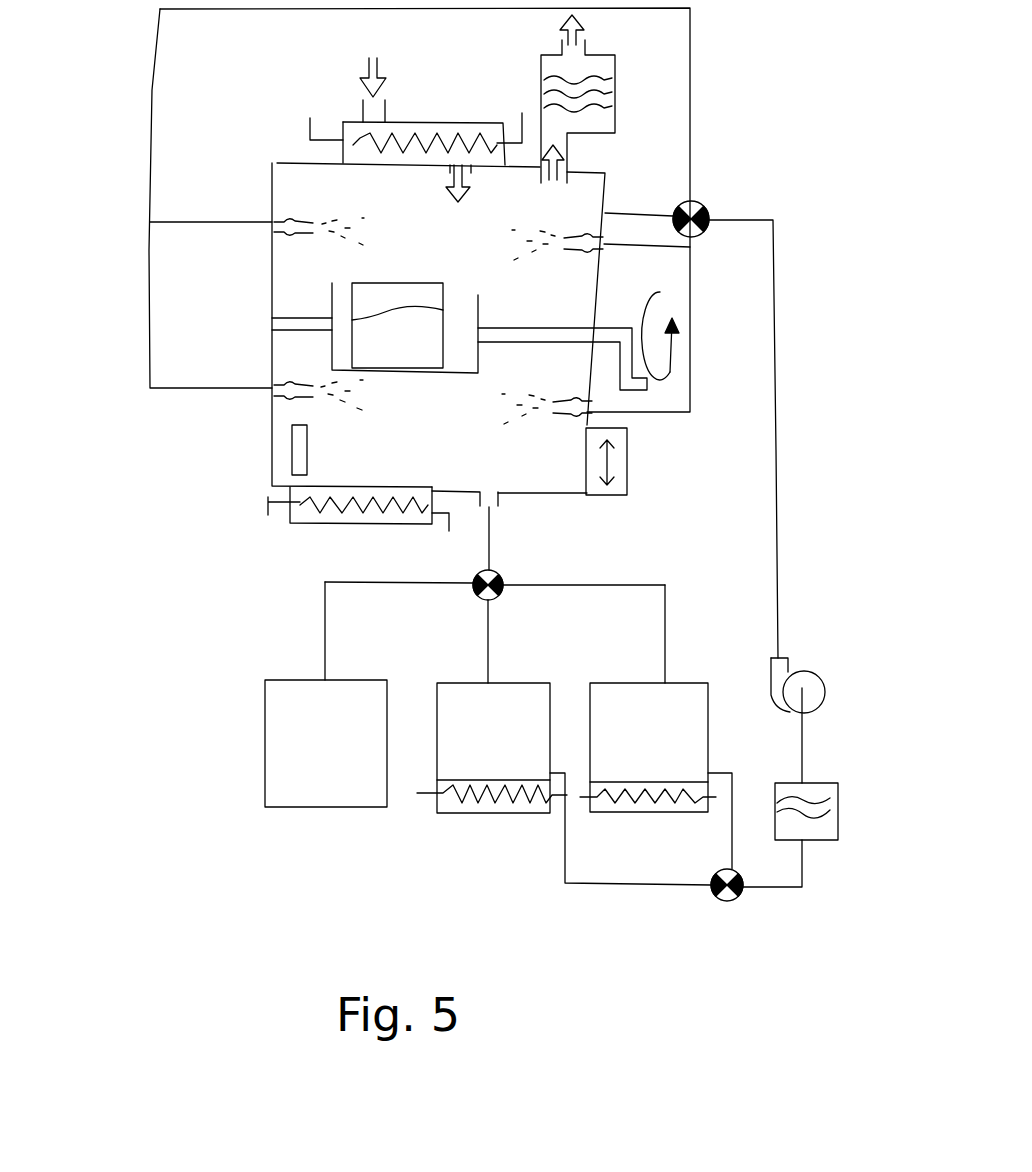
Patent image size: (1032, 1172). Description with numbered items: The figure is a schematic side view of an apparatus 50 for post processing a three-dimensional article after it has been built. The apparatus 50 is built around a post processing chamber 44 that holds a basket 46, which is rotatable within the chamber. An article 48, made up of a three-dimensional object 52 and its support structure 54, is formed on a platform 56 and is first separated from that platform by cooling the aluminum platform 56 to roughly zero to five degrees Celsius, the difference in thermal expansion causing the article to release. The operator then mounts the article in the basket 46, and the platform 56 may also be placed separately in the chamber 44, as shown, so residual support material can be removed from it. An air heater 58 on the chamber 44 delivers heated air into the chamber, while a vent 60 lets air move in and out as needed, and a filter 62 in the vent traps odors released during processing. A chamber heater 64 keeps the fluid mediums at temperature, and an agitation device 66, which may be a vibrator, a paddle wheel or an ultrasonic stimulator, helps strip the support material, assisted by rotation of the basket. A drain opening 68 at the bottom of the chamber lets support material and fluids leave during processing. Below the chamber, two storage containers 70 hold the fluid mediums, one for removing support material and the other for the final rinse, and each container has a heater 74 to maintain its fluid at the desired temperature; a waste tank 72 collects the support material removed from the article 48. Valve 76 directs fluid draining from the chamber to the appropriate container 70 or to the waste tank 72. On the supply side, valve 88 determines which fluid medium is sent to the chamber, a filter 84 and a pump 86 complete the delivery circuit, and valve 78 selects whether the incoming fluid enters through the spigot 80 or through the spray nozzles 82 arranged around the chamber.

The post processing chamber 44 is at (270, 458).
The basket 46 is at (332, 305).
The article 48 is at (378, 283).
The apparatus 50 is at (87, 229).
The three-dimensional object 52 is at (392, 317).
The support structure 54 is at (407, 358).
The platform 56 is at (292, 433).
The air heater 58 is at (472, 118).
The vent 60 is at (540, 70).
The filter 62 is at (602, 77).
The chamber heater 64 is at (313, 526).
The agitation device 66 is at (627, 447).
The drain opening 68 is at (495, 490).
The storage containers 70 is at (503, 738).
The waste tank 72 is at (337, 741).
The heater 74 is at (470, 808).
The valve 76 is at (475, 595).
The valve 78 is at (700, 200).
The spigot 80 is at (595, 207).
The spray nozzles 82 is at (300, 217).
The filter 84 is at (840, 812).
The pump 86 is at (810, 670).
The valve 88 is at (718, 900).